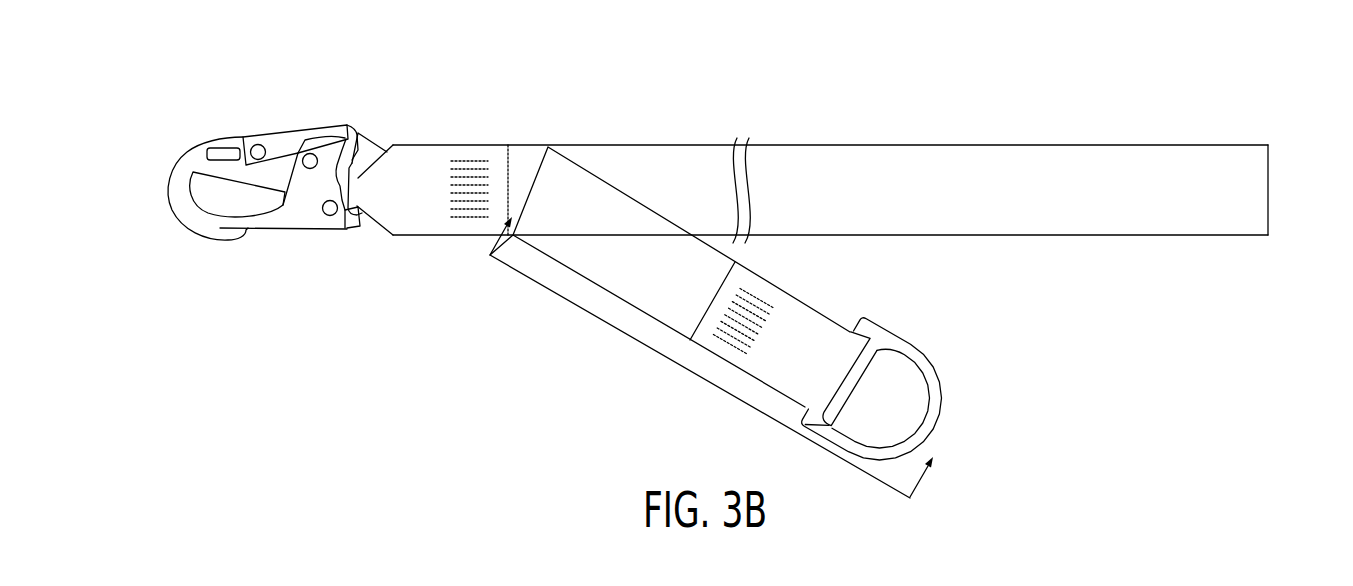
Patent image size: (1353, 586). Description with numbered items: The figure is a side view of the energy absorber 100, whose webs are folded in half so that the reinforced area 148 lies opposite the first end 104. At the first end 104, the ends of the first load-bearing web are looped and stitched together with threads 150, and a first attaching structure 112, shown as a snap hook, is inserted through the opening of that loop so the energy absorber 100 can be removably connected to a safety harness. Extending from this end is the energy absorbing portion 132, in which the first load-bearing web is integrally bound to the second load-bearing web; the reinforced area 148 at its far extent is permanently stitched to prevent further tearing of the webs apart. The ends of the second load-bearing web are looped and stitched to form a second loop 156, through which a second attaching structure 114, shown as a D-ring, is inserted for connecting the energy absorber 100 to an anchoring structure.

The energy absorber 100 is at (1098, 68).
The first end 104 is at (247, 127).
The first attaching structure 112 is at (167, 192).
The second attaching structure 114 is at (947, 397).
The energy absorbing portion 132 is at (918, 132).
The reinforced area 148 is at (1268, 197).
The threads 150 is at (463, 162).
The second loop 156 is at (760, 298).